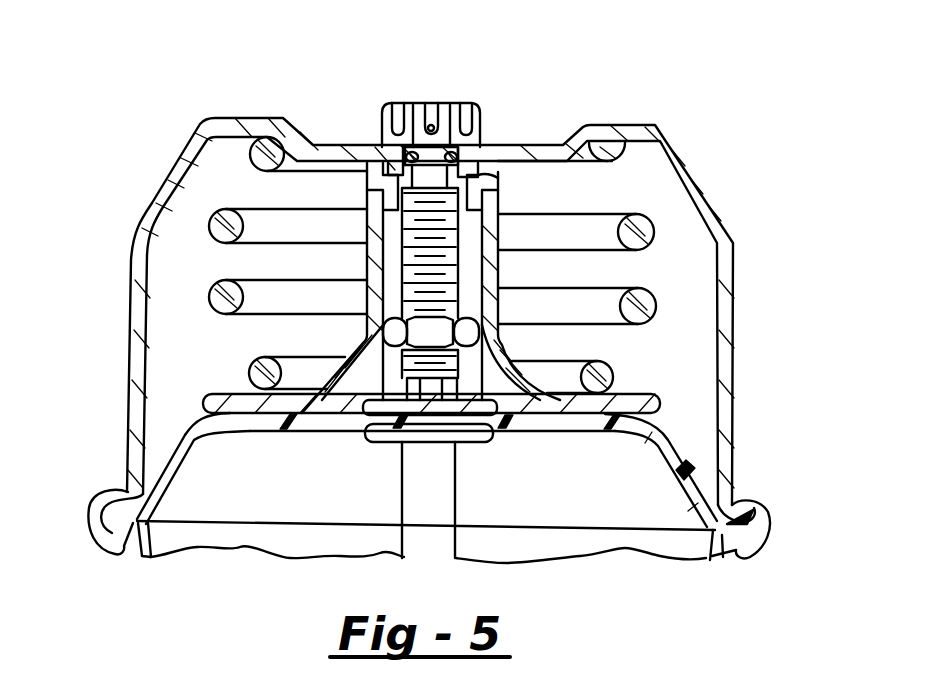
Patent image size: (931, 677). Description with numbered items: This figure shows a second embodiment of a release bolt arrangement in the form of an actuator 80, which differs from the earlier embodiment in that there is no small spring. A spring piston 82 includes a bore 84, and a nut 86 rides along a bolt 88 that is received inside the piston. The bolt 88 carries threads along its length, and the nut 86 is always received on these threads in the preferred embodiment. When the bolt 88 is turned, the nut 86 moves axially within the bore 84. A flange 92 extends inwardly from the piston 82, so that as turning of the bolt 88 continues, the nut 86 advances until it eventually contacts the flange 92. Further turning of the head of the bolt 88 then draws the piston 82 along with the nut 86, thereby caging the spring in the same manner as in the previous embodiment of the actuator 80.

The actuator 80 is at (110, 190).
The spring piston 82 is at (493, 328).
The bore 84 is at (480, 240).
The nut 86 is at (480, 342).
The bolt 88 is at (447, 110).
The flange 92 is at (385, 197).